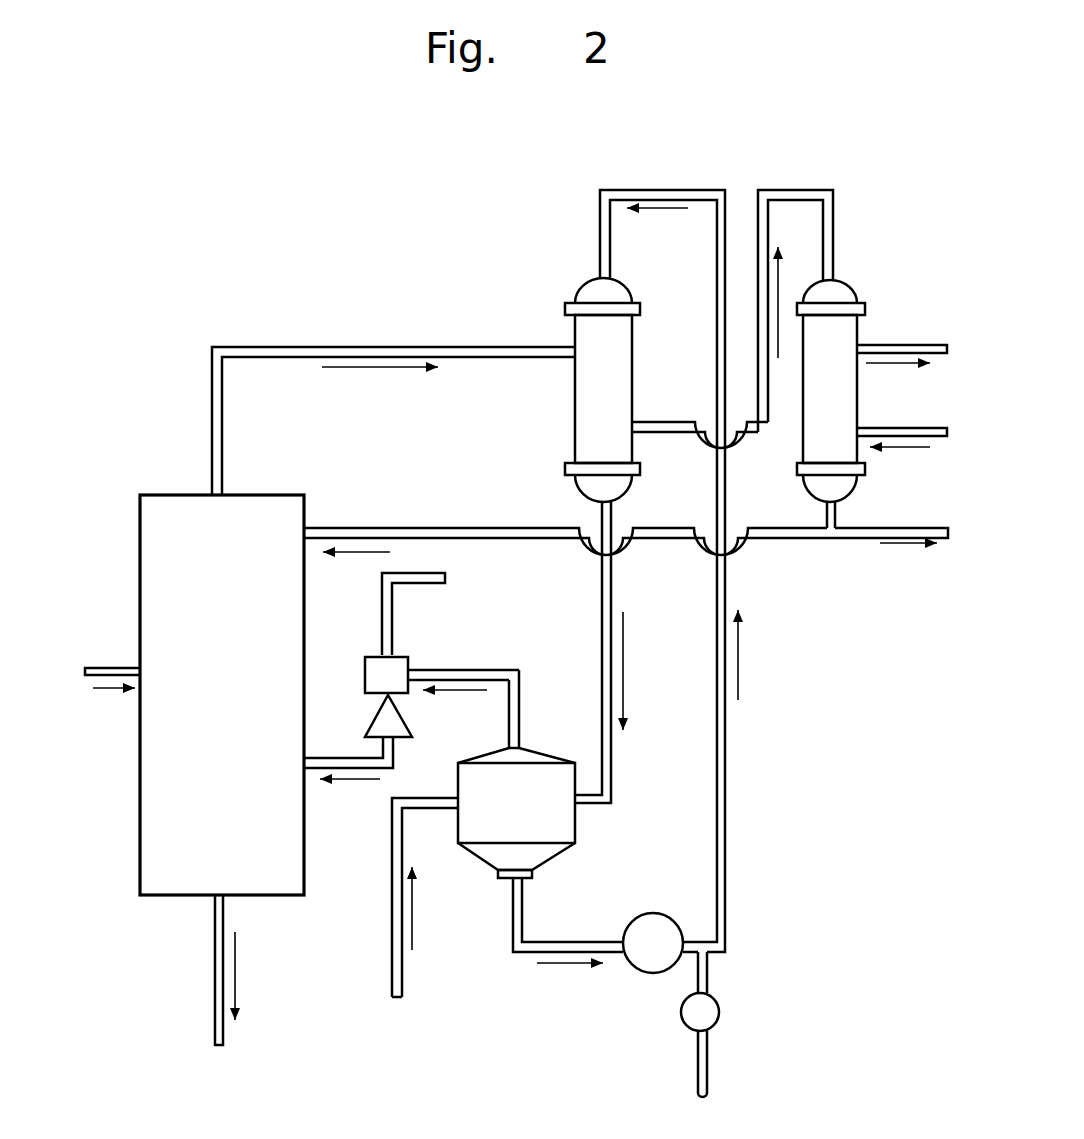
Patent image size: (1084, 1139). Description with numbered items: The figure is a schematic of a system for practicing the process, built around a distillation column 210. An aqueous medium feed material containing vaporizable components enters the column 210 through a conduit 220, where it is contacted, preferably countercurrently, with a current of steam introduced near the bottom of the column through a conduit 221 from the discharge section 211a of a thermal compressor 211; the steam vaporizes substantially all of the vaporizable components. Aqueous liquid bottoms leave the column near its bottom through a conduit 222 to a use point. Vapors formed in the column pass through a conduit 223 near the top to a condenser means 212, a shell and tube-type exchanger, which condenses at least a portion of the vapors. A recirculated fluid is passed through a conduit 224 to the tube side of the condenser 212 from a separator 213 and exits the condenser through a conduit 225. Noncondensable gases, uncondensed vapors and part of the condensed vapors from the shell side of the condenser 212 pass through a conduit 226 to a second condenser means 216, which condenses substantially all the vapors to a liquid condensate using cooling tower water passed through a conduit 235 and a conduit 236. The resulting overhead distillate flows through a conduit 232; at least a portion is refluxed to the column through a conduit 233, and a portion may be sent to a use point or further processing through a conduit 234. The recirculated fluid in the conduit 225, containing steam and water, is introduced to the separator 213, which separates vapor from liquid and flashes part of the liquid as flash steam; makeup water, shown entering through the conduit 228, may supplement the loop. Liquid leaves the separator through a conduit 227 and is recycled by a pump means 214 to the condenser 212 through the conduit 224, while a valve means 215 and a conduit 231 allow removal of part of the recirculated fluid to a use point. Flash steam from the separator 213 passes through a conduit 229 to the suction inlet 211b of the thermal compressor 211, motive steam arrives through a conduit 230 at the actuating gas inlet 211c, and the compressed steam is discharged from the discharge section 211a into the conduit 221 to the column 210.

The distillation column 210 is at (180, 520).
The thermal compressor 211 is at (416, 672).
The discharge section 211a is at (398, 740).
The suction inlet 211b is at (410, 672).
The actuating gas inlet 211c is at (395, 655).
The condenser means 212 is at (588, 392).
The separator 213 is at (555, 815).
The pump means 214 is at (648, 974).
The valve means 215 is at (719, 1012).
The second condenser means 216 is at (838, 292).
The conduit 220 is at (133, 665).
The conduit 221 is at (390, 780).
The conduit 222 is at (215, 992).
The conduit 223 is at (290, 347).
The conduit 224 is at (633, 190).
The conduit 225 is at (612, 598).
The conduit 226 is at (790, 190).
The conduit 227 is at (513, 925).
The makeup line 228 is at (392, 945).
The conduit 229 is at (520, 705).
The conduit 230 is at (447, 575).
The conduit 231 is at (708, 1068).
The conduit 232 is at (836, 516).
The conduit 233 is at (378, 530).
The conduit 234 is at (870, 545).
The conduit 235 is at (937, 440).
The conduit 236 is at (942, 355).